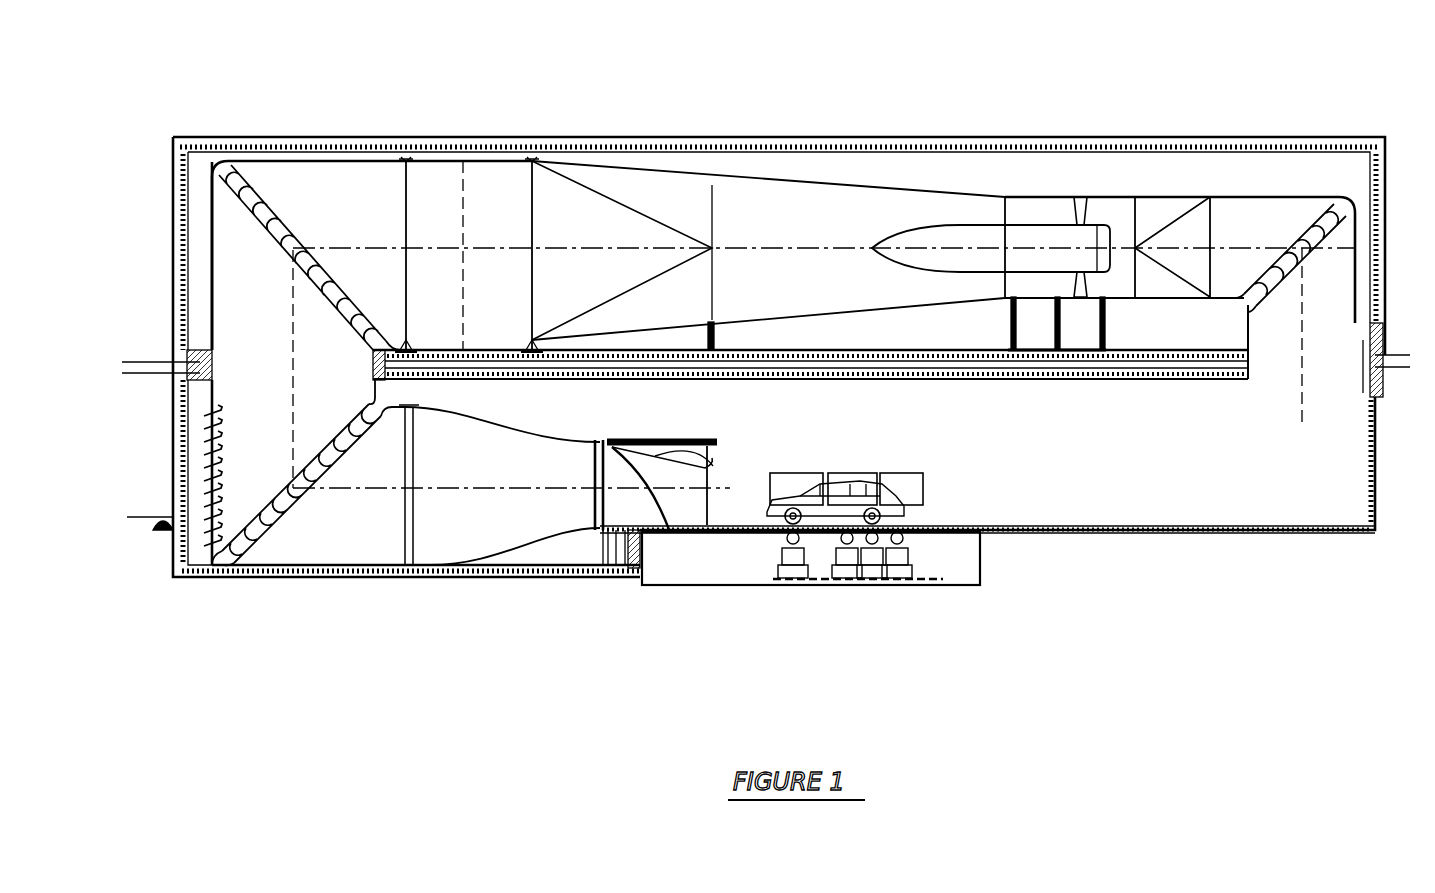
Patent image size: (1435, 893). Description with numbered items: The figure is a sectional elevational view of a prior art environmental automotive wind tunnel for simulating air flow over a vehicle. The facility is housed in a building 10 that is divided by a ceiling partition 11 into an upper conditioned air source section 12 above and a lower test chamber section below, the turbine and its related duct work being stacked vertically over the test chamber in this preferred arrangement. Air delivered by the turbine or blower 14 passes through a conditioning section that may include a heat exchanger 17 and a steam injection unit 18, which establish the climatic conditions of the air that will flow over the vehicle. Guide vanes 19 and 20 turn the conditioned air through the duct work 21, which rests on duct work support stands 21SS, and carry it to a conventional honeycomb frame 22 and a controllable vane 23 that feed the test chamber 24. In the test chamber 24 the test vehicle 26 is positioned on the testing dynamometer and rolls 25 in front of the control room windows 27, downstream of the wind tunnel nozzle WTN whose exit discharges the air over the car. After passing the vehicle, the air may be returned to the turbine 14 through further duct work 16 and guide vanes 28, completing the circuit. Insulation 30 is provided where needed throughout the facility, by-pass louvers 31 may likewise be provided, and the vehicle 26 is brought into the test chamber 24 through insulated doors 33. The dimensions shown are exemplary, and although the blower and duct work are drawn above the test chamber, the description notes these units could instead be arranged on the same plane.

The building 10 is at (855, 130).
The ceiling partition 11 is at (958, 362).
The upper conditioned air source section 12 is at (950, 167).
The turbine or blower 14 is at (1030, 195).
The further duct work 16 is at (1268, 355).
The heat exchanger 17 is at (498, 160).
The steam injection unit 18 is at (432, 160).
The guide vane 19 is at (320, 248).
The guide vane 20 is at (300, 462).
The duct work 21 is at (307, 160).
The duct work support stands 21SS is at (407, 340).
The honeycomb frame 22 is at (606, 450).
The controllable vane 23 is at (695, 470).
The test chamber 24 is at (830, 457).
The testing dynamometer and rolls 25 is at (780, 563).
The test vehicle 26 is at (840, 490).
The control room windows 27 is at (925, 487).
The guide vanes 28 is at (1290, 228).
The insulation 30 is at (185, 268).
The by-pass louvers 31 is at (205, 470).
The insulated doors 33 is at (1368, 425).
The wind tunnel nozzle WTN is at (697, 433).